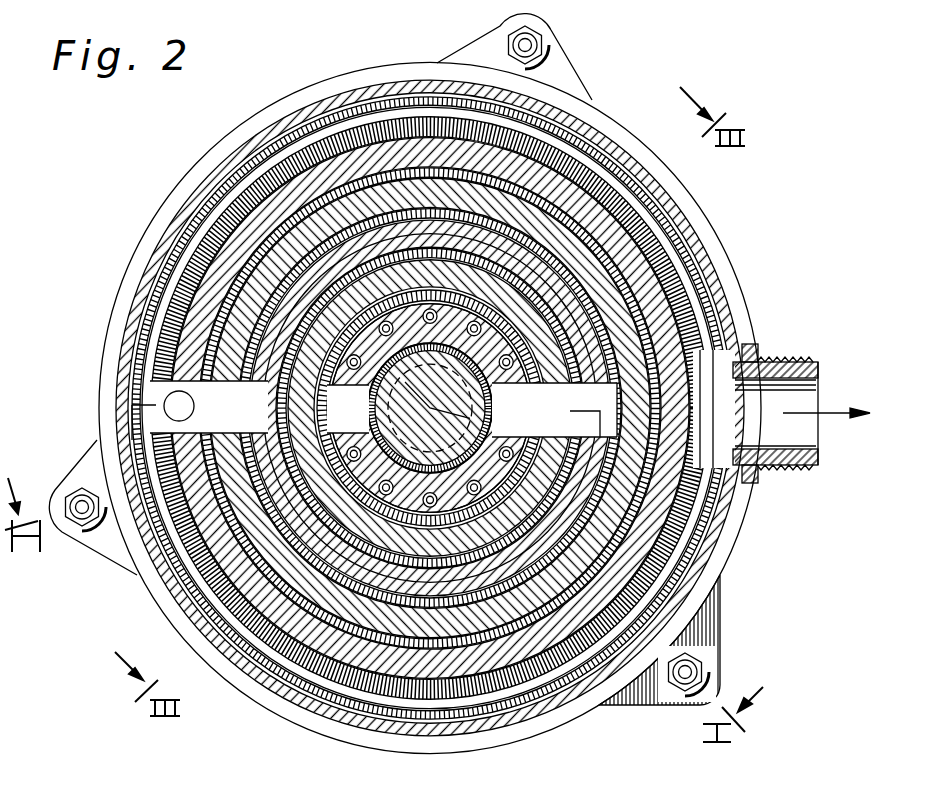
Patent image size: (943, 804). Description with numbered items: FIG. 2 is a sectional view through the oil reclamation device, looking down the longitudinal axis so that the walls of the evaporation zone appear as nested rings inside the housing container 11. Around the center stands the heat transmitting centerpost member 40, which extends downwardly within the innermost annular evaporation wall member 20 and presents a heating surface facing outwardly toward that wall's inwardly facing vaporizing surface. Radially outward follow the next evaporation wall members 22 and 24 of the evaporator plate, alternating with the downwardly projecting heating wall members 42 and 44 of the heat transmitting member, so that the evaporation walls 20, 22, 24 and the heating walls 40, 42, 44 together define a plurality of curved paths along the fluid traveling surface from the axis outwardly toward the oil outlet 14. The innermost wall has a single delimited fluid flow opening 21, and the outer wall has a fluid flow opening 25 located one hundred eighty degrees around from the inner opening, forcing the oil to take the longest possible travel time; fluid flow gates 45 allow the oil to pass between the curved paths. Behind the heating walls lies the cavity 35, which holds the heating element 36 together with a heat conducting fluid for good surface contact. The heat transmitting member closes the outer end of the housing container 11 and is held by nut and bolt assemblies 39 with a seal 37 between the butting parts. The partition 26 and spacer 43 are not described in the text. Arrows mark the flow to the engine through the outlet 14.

The housing container 11 is at (157, 250).
The oil outlet 14 is at (795, 357).
The innermost annular evaporation wall 20 is at (452, 520).
The fluid flow opening 21 is at (228, 582).
The annular evaporation wall member 22 is at (560, 287).
The annular evaporation wall member 24 is at (600, 525).
The fluid flow opening 25 is at (200, 383).
The partition ring 26 is at (345, 578).
The cavity 35 is at (369, 413).
The heating element 36 is at (536, 398).
The seal 37 is at (662, 214).
The nut and bolt assemblies 39 is at (527, 43).
The heat transmitting centerpost member 40 is at (385, 560).
The heating wall member 42 is at (548, 325).
The spacer 43 is at (207, 442).
The heating wall member 44 is at (622, 490).
The fluid flow gates 45 is at (237, 298).